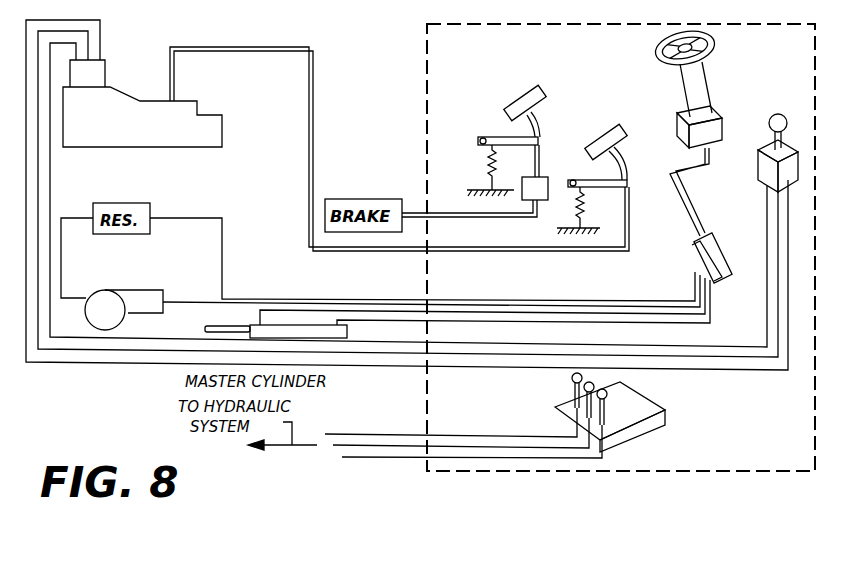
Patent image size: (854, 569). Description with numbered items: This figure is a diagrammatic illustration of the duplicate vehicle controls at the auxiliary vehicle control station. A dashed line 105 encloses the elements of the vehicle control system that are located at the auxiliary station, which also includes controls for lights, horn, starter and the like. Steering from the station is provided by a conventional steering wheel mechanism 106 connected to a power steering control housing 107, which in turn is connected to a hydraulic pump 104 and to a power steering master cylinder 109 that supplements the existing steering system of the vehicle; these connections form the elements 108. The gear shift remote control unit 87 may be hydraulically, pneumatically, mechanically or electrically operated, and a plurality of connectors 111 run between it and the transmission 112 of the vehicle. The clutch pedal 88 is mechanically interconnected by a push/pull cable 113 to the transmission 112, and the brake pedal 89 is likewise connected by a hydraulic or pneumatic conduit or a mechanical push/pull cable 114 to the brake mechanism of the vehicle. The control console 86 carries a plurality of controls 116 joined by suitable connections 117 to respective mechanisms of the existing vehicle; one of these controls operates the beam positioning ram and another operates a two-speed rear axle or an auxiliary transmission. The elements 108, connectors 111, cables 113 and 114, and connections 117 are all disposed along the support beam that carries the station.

The control console 86 is at (634, 420).
The gear shift remote control unit 87 is at (765, 165).
The clutch pedal 88 is at (604, 140).
The brake pedal 89 is at (522, 97).
The hydraulic pump 104 is at (130, 297).
The dashed line 105 is at (428, 80).
The steering wheel mechanism 106 is at (700, 82).
The power steering control housing 107 is at (697, 238).
The elements 108 is at (486, 314).
The power steering master cylinder 109 is at (303, 326).
The connectors 111 is at (466, 345).
The transmission 112 is at (112, 96).
The push/pull cable 113 is at (555, 251).
The push/pull cable 114 is at (450, 213).
The controls 116 is at (596, 398).
The connections 117 is at (360, 434).